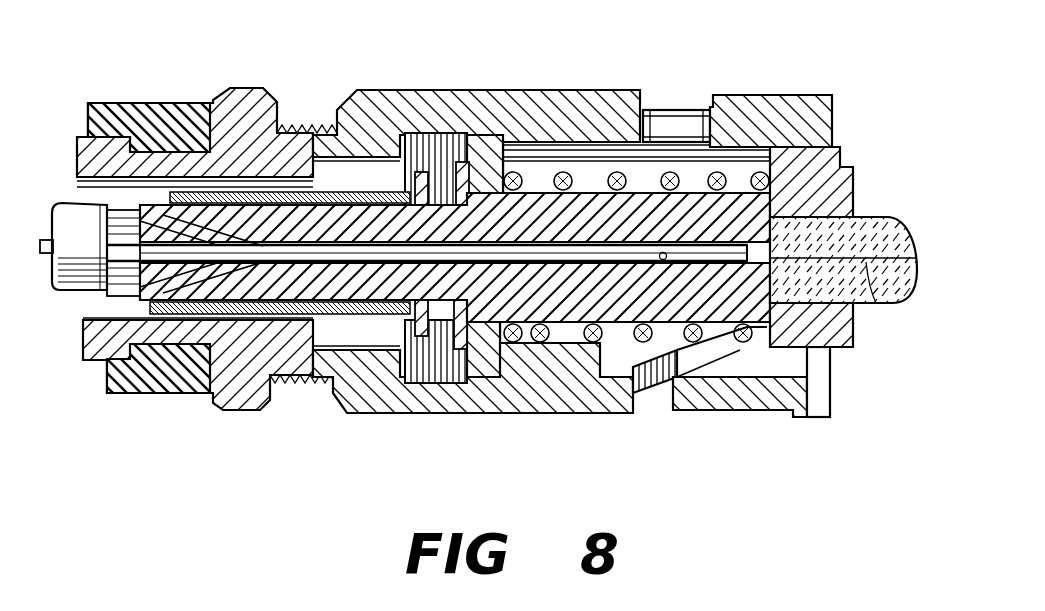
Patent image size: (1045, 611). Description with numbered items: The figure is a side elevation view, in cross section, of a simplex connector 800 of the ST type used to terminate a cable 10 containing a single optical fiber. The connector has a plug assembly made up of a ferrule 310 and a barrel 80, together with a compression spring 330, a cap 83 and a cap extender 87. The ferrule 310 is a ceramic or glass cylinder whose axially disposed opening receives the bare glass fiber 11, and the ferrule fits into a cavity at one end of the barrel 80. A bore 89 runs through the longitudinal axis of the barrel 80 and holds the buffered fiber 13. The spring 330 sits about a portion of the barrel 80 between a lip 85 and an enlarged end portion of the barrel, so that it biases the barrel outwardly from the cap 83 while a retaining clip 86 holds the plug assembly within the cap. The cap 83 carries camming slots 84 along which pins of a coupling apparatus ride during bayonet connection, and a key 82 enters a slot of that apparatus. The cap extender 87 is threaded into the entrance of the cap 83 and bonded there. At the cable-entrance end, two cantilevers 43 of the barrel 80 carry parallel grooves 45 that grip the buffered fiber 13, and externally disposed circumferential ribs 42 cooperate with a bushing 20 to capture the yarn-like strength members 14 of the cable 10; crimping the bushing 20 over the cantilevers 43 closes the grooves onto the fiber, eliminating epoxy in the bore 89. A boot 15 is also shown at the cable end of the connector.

The cable 10 is at (60, 300).
The glass fiber 11 is at (868, 303).
The buffered fiber 13 is at (427, 231).
The strength members 14 is at (257, 206).
The boot 15 is at (85, 205).
The bushing 20 is at (307, 195).
The circumferential ribs 42 is at (372, 302).
The cantilevers 43 is at (242, 270).
The grooves 45 is at (192, 265).
The barrel 80 is at (848, 360).
The key 82 is at (840, 153).
The cap 83 is at (755, 89).
The camming slots 84 is at (677, 125).
The lip 85 is at (496, 156).
The retaining clip 86 is at (478, 176).
The cap extender 87 is at (247, 84).
The bore 89 is at (666, 262).
The ferrule 310 is at (873, 217).
The compression spring 330 is at (617, 171).
The simplex connector 800 is at (458, 436).